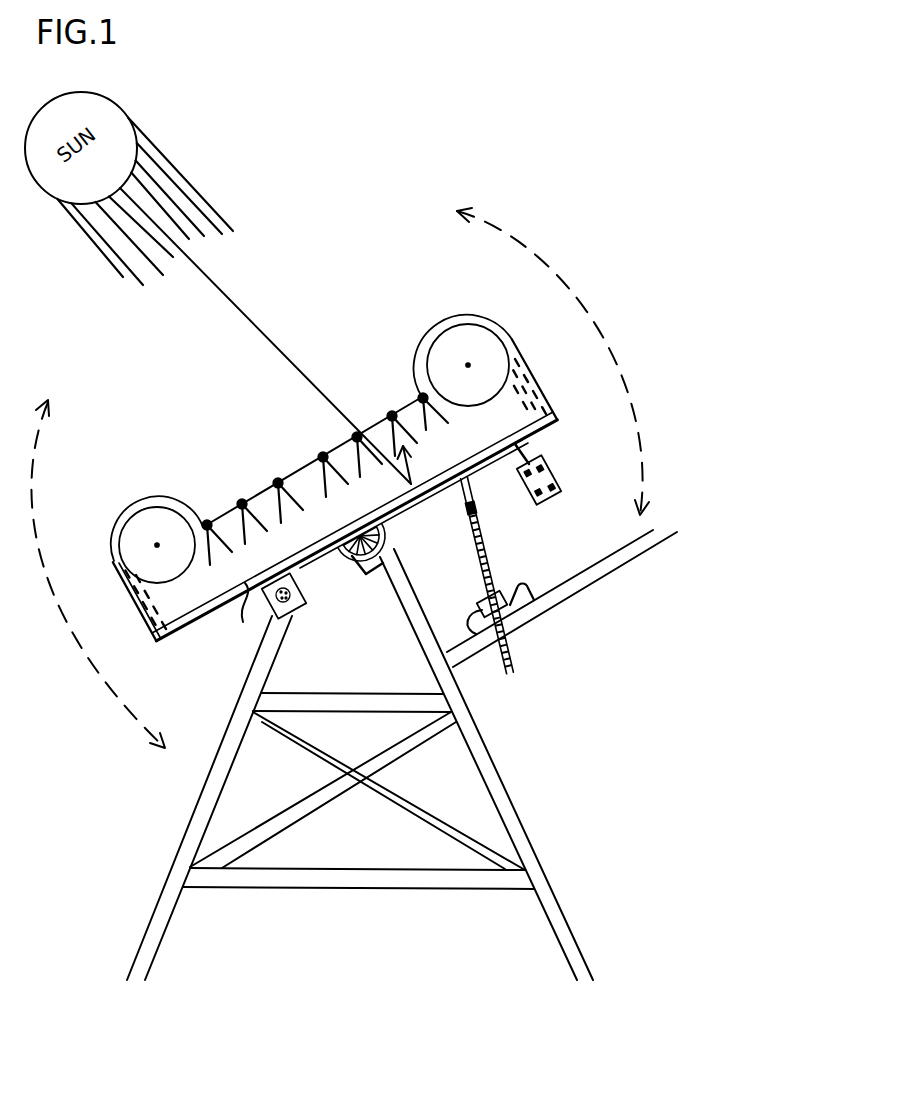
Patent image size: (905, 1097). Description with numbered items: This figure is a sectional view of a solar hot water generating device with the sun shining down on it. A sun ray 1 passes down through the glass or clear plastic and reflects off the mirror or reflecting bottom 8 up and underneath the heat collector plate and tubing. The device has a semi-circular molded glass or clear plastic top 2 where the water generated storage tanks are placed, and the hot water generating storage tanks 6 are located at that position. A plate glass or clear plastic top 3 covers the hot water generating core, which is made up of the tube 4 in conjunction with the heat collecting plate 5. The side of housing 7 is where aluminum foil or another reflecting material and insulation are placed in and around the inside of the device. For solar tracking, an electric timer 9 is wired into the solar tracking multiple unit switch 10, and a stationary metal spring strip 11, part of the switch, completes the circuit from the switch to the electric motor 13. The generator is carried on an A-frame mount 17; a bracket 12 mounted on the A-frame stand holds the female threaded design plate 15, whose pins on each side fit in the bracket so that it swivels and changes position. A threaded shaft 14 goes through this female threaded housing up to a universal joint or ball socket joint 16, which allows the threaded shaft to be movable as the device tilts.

The sun ray 1 is at (277, 346).
The semi-circular molded glass or clear plastic top 2 is at (122, 512).
The plate glass or clear plastic top 3 is at (288, 470).
The tube 4 is at (241, 502).
The heat collecting plate 5 is at (414, 412).
The hot water generating storage tanks 6 is at (110, 538).
The side of housing 7 is at (172, 612).
The mirror or reflecting bottom 8 is at (237, 615).
The electric timer 9 is at (305, 592).
The solar tracking multiple unit switch 10 is at (387, 518).
The stationary metal spring strip 11 is at (363, 556).
The bracket 12 is at (518, 586).
The electric motor 13 is at (560, 497).
The threaded shaft 14 is at (513, 653).
The female threaded design plate 15 is at (483, 600).
The universal joint or ball socket joint 16 is at (482, 508).
The A-frame mount 17 is at (502, 773).